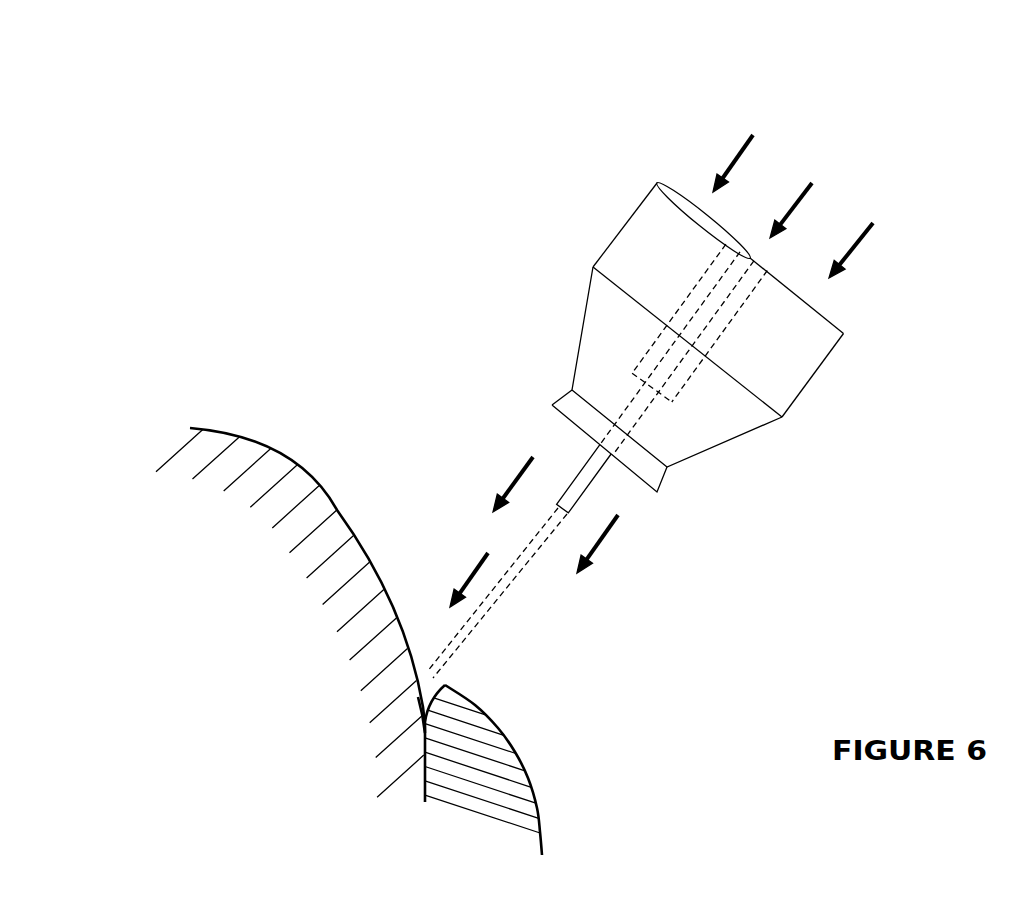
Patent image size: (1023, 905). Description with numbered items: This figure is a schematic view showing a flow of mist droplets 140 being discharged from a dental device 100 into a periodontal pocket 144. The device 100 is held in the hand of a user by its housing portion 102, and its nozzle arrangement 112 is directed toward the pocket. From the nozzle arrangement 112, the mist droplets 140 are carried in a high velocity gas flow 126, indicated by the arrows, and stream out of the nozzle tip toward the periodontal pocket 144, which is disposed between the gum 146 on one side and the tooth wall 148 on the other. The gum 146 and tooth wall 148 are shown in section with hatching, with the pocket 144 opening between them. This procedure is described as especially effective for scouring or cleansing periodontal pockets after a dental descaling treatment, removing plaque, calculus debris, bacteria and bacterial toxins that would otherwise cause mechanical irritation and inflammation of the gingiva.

The device 100 is at (668, 150).
The housing portion 102 is at (844, 334).
The nozzle arrangement 112 is at (547, 306).
The high velocity gas flow 126 is at (512, 483).
The mist droplets 140 is at (493, 608).
The periodontal pocket 144 is at (417, 697).
The gum 146 is at (498, 718).
The tooth wall 148 is at (280, 457).